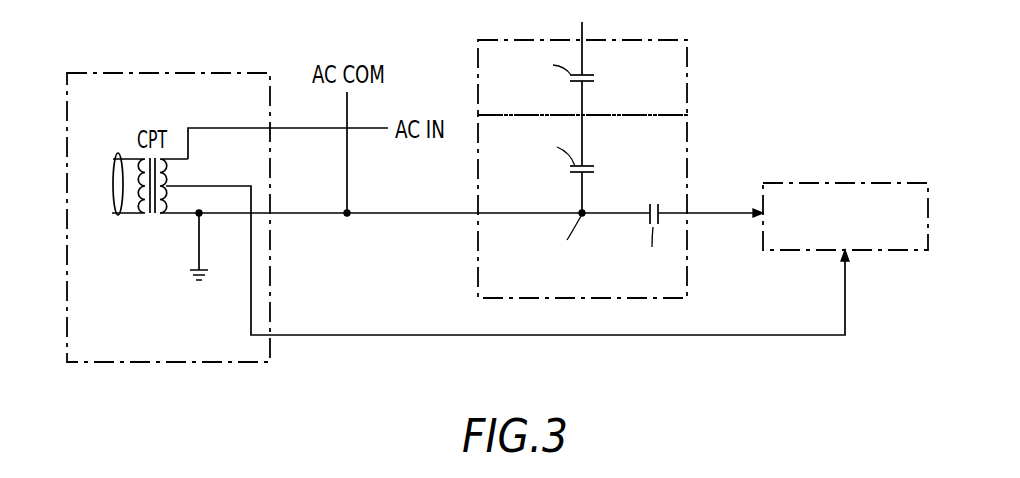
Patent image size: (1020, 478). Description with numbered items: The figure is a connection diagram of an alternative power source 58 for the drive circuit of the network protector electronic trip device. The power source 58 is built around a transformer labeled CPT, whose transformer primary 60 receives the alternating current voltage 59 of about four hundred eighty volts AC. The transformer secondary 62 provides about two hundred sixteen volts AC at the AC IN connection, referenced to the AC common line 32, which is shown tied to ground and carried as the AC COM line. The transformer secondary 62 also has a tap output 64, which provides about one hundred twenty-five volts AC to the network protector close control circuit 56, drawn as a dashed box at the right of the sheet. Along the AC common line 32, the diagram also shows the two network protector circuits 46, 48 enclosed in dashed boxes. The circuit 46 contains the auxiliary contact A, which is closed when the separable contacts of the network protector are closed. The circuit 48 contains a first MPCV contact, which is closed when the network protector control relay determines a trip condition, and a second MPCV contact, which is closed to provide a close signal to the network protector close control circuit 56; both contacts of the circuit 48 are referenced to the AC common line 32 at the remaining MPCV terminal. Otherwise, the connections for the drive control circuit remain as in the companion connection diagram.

The AC common line 32 is at (199, 241).
The network protector circuit 46 is at (688, 63).
The network protector circuit 48 is at (688, 163).
The network protector close control circuit 56 is at (830, 182).
The alternative power source 58 is at (193, 363).
The alternating current voltage 59 is at (119, 157).
The transformer primary 60 is at (136, 214).
The transformer secondary 62 is at (166, 214).
The tap output 64 is at (208, 186).